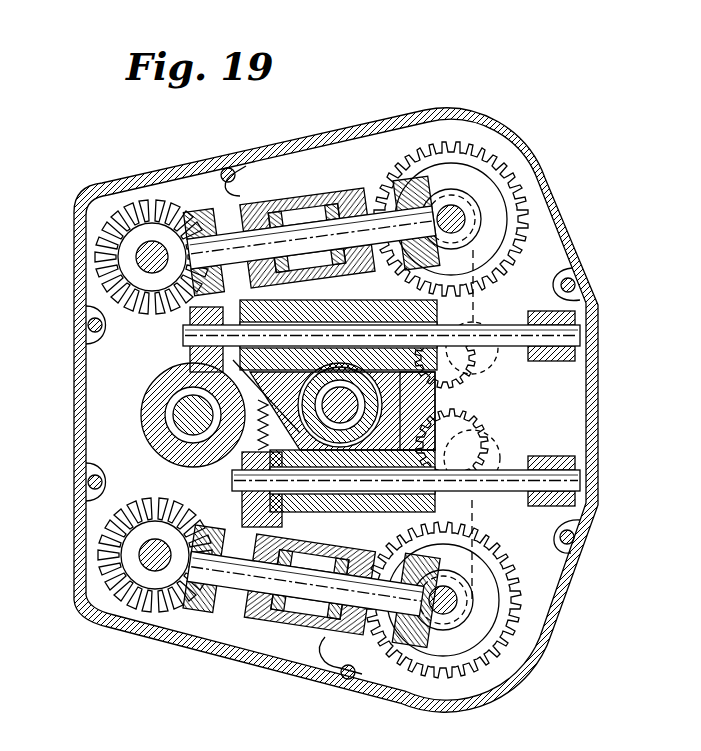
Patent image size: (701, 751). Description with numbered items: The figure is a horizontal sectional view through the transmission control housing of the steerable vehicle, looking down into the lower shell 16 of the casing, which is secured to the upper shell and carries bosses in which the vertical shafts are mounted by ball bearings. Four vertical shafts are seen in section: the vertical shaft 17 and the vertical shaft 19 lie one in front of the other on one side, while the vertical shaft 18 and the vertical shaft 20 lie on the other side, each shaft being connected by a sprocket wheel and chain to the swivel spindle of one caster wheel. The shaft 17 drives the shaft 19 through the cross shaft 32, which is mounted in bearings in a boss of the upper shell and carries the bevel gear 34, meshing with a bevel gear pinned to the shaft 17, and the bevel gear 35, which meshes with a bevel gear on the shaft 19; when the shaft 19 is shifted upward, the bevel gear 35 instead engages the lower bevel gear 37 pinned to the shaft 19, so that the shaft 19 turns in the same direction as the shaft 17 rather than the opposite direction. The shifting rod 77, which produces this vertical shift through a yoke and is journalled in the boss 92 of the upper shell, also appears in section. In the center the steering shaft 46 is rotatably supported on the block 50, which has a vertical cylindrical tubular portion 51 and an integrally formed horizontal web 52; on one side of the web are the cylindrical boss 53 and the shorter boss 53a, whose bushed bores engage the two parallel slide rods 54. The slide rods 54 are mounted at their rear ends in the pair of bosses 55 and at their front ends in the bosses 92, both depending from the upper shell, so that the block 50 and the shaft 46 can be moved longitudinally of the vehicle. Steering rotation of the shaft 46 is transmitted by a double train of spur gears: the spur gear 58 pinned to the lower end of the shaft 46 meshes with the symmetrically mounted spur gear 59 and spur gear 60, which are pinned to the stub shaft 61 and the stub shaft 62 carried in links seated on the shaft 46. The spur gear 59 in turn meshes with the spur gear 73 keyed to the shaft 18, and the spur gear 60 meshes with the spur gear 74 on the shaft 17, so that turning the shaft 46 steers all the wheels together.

The lower shell 16 is at (600, 372).
The vertical shaft 17 is at (452, 612).
The vertical shaft 18 is at (458, 212).
The vertical shaft 19 is at (150, 580).
The vertical shaft 20 is at (153, 240).
The cross shaft 32 is at (380, 225).
The bevel gear 34 is at (451, 207).
The bevel gear 35 is at (212, 205).
The lower bevel gear 37 is at (98, 258).
The shaft 46 is at (342, 406).
The block 50 is at (398, 418).
The vertical cylindrical tubular portion 51 is at (290, 540).
The horizontal web 52 is at (462, 408).
The cylindrical boss 53 is at (340, 308).
The shorter boss 53a is at (380, 512).
The slide rods 54 is at (493, 332).
The bosses 55 is at (560, 363).
The spur gear 58 is at (262, 432).
The spur gear 59 is at (490, 370).
The spur gear 60 is at (492, 455).
The stub shaft 61 is at (445, 358).
The stub shaft 62 is at (472, 438).
The spur gear 73 is at (525, 210).
The spur gear 74 is at (518, 600).
The shifting rod 77 is at (192, 414).
The boss 92 is at (190, 318).